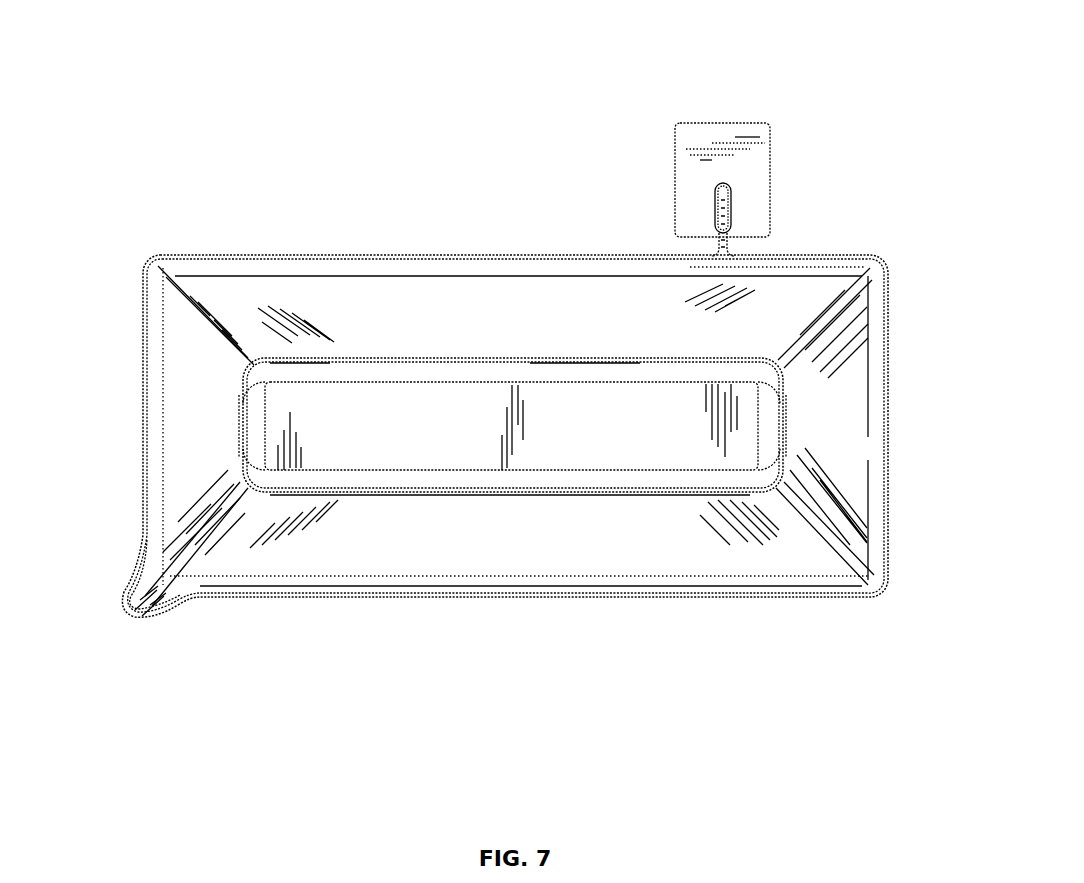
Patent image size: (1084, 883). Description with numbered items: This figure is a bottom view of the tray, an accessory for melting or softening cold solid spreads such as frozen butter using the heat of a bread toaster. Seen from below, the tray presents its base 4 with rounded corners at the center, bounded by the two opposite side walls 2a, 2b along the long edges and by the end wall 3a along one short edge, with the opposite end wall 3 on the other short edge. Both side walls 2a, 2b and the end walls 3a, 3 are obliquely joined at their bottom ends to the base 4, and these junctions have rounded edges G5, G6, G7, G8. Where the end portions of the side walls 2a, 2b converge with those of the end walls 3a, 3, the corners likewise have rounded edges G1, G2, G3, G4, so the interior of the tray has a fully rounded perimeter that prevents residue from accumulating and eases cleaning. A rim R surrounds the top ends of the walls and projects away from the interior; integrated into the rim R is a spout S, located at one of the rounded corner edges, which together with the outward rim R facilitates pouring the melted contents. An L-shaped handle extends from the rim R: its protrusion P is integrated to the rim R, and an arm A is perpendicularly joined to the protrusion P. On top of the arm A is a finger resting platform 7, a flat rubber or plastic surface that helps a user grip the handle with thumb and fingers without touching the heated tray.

The finger resting platform 7 is at (708, 128).
The arm A is at (718, 195).
The protrusion P is at (726, 243).
The rim R is at (435, 268).
The spout S is at (148, 600).
The side wall 2a is at (520, 296).
The side wall 2b is at (519, 557).
The right end wall 3 is at (841, 428).
The end wall 3a is at (187, 426).
The base 4 is at (513, 425).
The rounded edge G1 is at (232, 503).
The rounded edge G2 is at (789, 497).
The rounded edge G3 is at (232, 348).
The rounded edge G4 is at (806, 332).
The rounded edge G5 is at (658, 480).
The rounded edge G6 is at (593, 372).
The rounded edge G7 is at (250, 405).
The rounded edge G8 is at (768, 405).